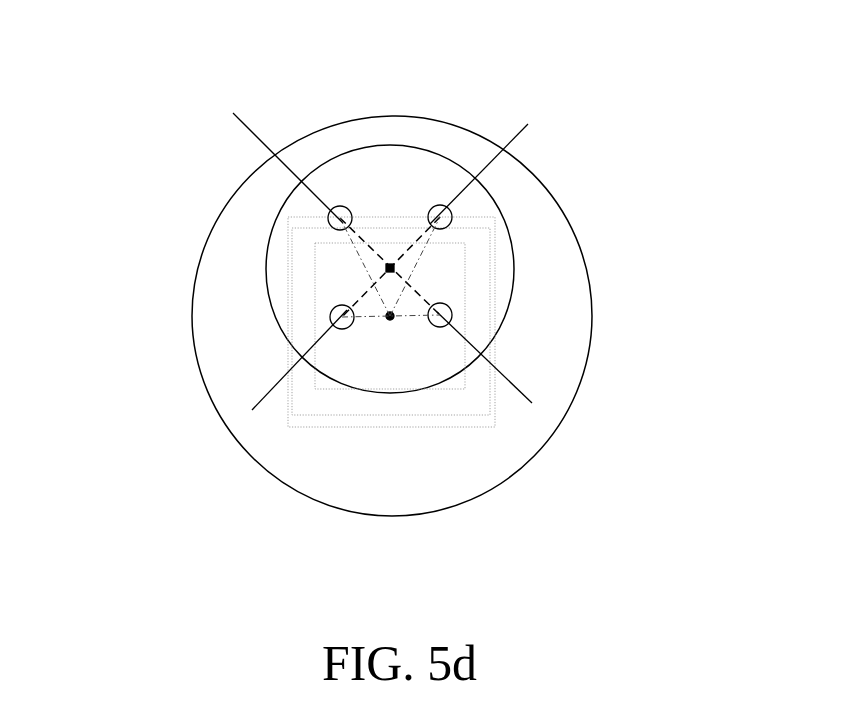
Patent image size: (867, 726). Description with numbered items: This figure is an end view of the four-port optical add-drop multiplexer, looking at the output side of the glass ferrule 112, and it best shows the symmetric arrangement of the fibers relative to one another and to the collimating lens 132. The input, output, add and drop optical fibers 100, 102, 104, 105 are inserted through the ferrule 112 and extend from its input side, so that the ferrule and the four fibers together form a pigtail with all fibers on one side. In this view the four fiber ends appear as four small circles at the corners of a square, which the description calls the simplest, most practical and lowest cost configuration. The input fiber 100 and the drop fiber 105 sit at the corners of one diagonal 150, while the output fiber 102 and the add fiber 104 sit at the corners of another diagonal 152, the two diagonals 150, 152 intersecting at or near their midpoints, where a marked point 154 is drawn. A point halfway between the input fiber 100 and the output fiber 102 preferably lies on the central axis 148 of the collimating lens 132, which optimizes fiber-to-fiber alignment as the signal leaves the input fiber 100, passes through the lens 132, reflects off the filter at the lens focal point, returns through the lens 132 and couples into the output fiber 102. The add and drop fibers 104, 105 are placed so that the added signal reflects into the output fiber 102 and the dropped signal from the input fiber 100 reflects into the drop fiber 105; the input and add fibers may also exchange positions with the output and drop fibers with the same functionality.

The input optical fiber 100 is at (515, 387).
The output optical fiber 102 is at (280, 380).
The add optical fiber 104 is at (517, 137).
The drop optical fiber 105 is at (250, 134).
The glass ferrule 112 is at (360, 368).
The collimating lens 132 is at (557, 313).
The central axis 148 is at (390, 316).
The first diagonal 150 is at (418, 295).
The second diagonal 152 is at (407, 252).
The center point marker 154 is at (388, 267).